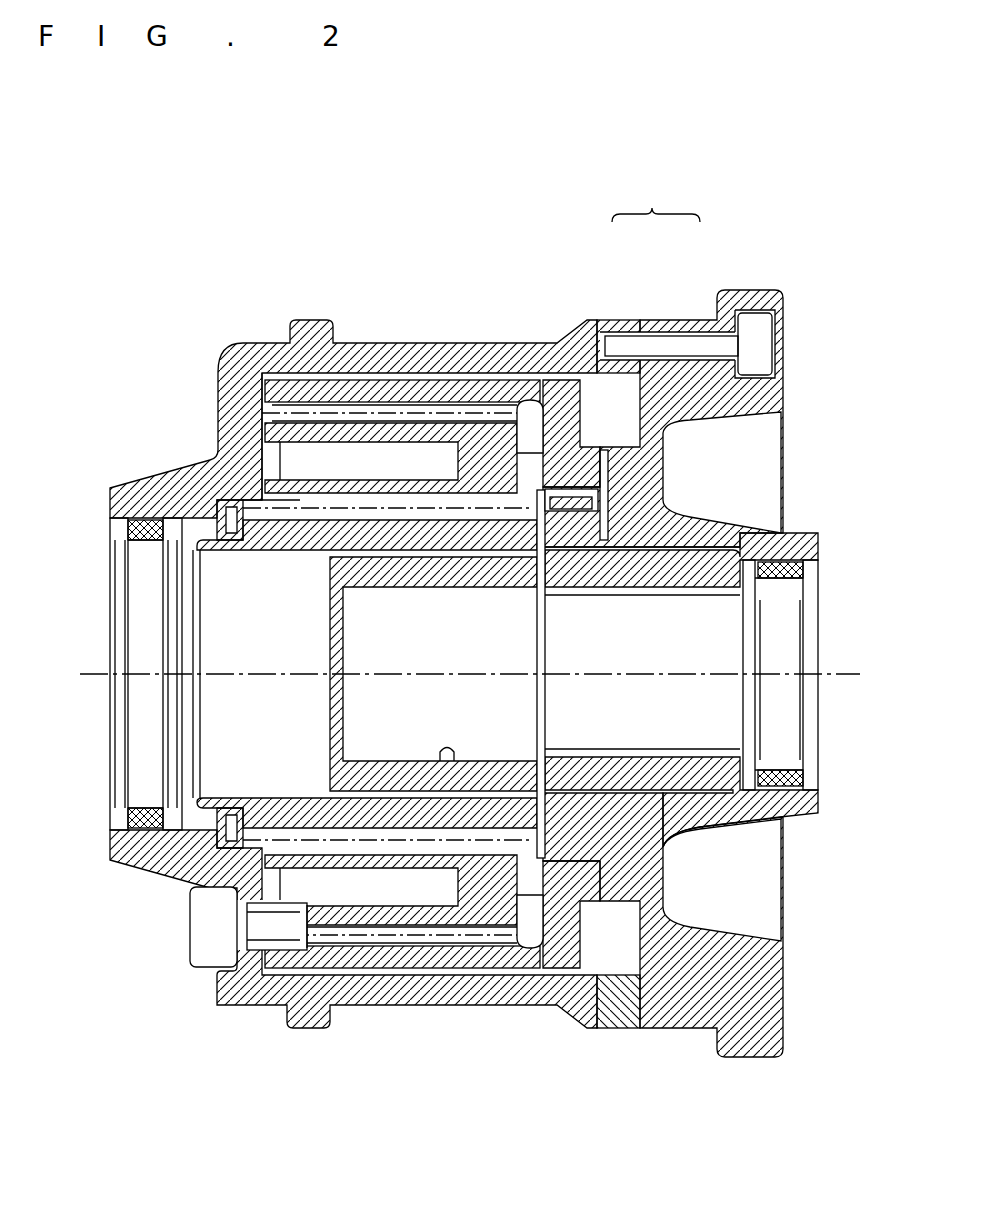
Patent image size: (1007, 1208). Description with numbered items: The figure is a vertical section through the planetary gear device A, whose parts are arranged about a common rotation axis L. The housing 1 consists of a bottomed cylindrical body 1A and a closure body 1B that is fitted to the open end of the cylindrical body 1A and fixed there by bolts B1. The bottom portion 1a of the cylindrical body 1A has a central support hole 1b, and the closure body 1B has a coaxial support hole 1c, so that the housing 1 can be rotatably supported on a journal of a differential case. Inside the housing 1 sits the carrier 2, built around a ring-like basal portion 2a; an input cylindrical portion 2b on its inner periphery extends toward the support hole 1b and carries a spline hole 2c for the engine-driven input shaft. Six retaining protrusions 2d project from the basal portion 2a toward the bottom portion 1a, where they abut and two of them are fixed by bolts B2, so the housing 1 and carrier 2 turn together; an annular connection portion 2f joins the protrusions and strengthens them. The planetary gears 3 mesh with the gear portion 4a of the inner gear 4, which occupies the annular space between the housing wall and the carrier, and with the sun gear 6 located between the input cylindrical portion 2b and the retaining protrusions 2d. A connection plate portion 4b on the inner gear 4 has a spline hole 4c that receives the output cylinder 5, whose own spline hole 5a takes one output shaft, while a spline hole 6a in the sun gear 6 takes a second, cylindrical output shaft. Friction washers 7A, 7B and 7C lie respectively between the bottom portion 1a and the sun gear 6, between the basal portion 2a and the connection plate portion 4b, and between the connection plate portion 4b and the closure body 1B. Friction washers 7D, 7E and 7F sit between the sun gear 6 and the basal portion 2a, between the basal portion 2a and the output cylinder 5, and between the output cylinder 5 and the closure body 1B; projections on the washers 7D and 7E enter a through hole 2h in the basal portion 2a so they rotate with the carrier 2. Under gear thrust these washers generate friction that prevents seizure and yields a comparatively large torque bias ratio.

The housing 1 is at (656, 201).
The cylindrical body 1A is at (614, 320).
The closure body 1B is at (690, 318).
The bottom portion 1a is at (290, 456).
The support hole 1b is at (133, 805).
The support hole 1c is at (785, 762).
The carrier 2 is at (500, 917).
The basal portion 2a is at (453, 760).
The input cylindrical portion 2b is at (410, 935).
The spline hole 2c is at (452, 850).
The retaining protrusion 2d is at (367, 890).
The connection portion 2f is at (287, 960).
The through hole 2h is at (485, 495).
The planetary gear 3 is at (300, 428).
The inner gear 4 is at (442, 366).
The gear portion 4a is at (372, 432).
The connection plate portion 4b is at (600, 425).
The spline hole 4c is at (615, 507).
The output cylinder 5 is at (680, 567).
The spline hole 5a is at (657, 598).
The sun gear 6 is at (330, 528).
The spline hole 6a is at (233, 780).
The friction washer 7A is at (215, 513).
The friction washer 7B is at (530, 450).
The friction washer 7C is at (617, 487).
The friction washer 7D is at (487, 565).
The friction washer 7E is at (515, 565).
The friction washer 7F is at (603, 588).
The planetary gear device A is at (510, 306).
The bolt B1 is at (773, 342).
The bolt B2 is at (190, 938).
The rotation axis L is at (838, 672).